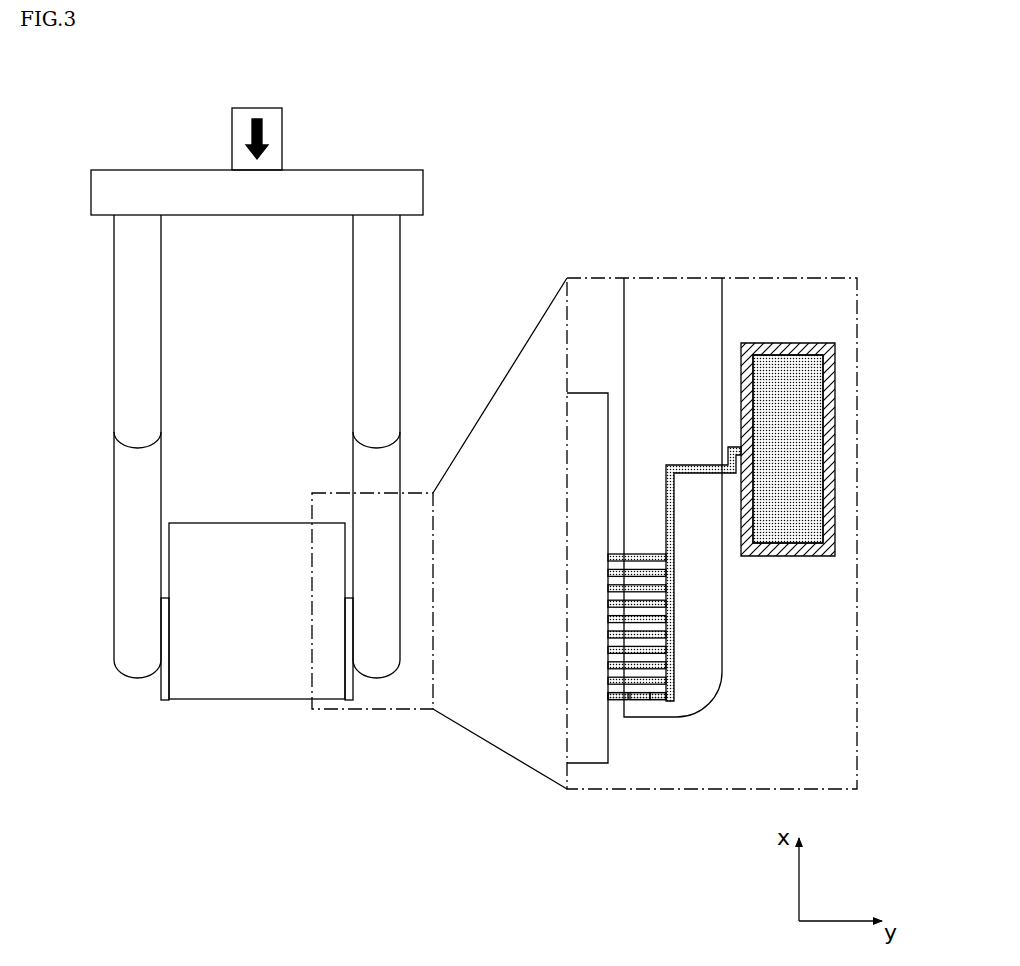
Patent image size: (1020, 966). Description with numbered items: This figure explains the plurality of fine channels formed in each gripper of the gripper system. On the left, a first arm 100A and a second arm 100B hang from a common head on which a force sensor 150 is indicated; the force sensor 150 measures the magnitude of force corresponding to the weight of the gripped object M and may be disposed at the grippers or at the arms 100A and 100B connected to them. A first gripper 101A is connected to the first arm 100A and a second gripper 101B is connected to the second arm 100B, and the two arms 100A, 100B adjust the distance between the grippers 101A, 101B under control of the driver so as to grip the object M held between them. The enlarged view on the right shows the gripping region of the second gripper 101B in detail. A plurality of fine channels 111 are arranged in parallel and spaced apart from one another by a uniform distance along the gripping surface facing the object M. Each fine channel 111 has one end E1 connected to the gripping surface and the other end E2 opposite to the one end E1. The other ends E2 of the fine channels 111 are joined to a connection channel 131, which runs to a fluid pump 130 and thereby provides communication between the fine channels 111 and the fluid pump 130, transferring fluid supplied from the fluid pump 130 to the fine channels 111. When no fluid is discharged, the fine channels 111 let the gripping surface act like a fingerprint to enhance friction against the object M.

The force sensor 150 is at (272, 108).
The first arm 100A is at (114, 292).
The second arm 100B is at (400, 293).
The first gripper 101A is at (165, 700).
The second gripper 101B is at (348, 700).
The object M is at (241, 523).
The fluid pump 130 is at (835, 468).
The connection channel 131 is at (673, 632).
The one end E1 is at (612, 702).
The other end E2 is at (660, 702).
The fine channels 111 is at (652, 702).